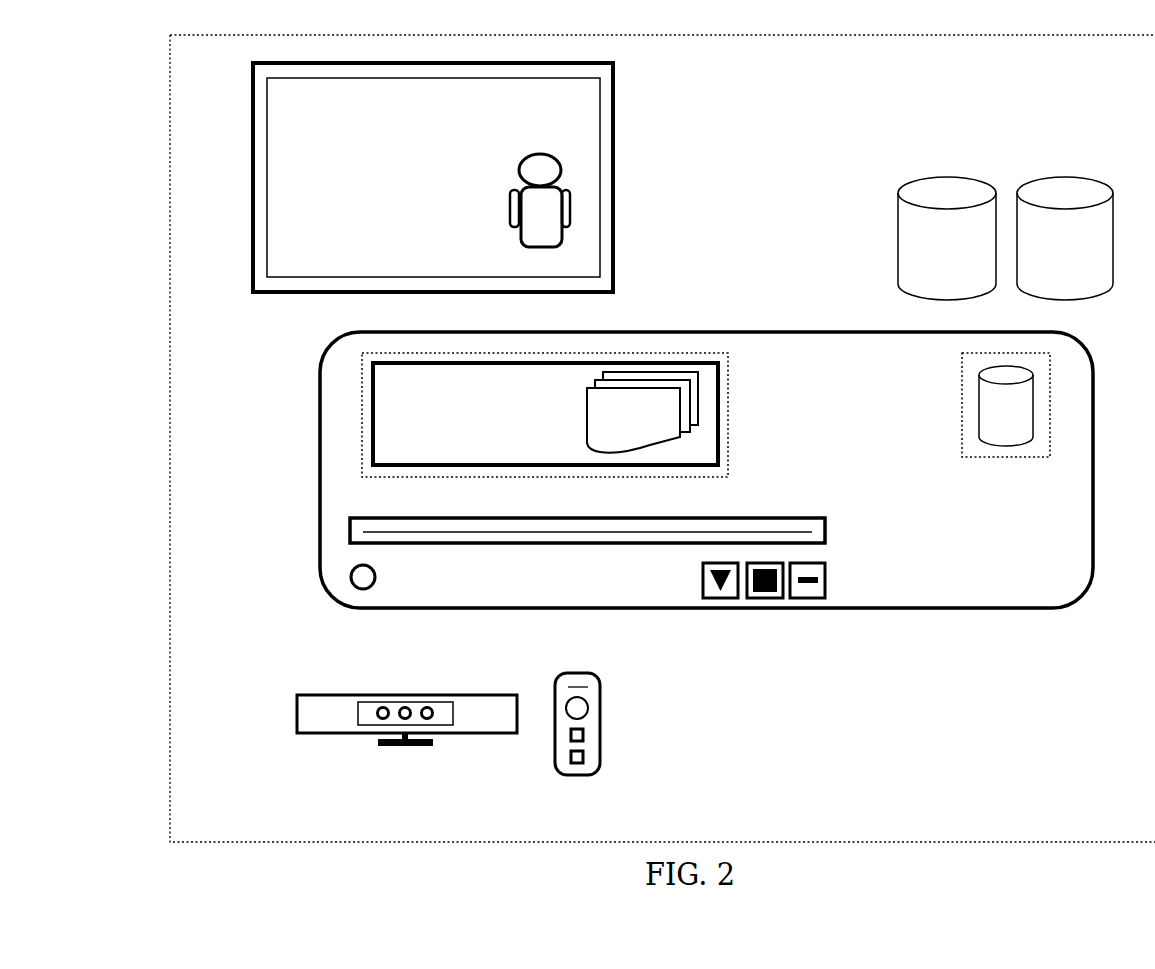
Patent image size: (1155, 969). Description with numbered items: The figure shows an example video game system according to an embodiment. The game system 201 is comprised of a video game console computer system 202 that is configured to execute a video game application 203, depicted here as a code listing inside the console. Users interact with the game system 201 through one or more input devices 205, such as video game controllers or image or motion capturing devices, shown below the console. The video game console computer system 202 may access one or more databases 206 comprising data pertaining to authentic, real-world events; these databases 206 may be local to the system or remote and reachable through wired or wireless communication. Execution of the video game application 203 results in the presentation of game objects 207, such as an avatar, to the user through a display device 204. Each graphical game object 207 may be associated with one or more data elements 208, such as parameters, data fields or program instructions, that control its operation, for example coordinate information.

The game system 201 is at (150, 200).
The video game console computer system 202 is at (300, 455).
The video game application 203 is at (445, 465).
The display device 204 is at (247, 178).
The input devices 205 is at (298, 653).
The databases 206 is at (942, 410).
The game objects 207 is at (503, 188).
The data elements 208 is at (703, 410).